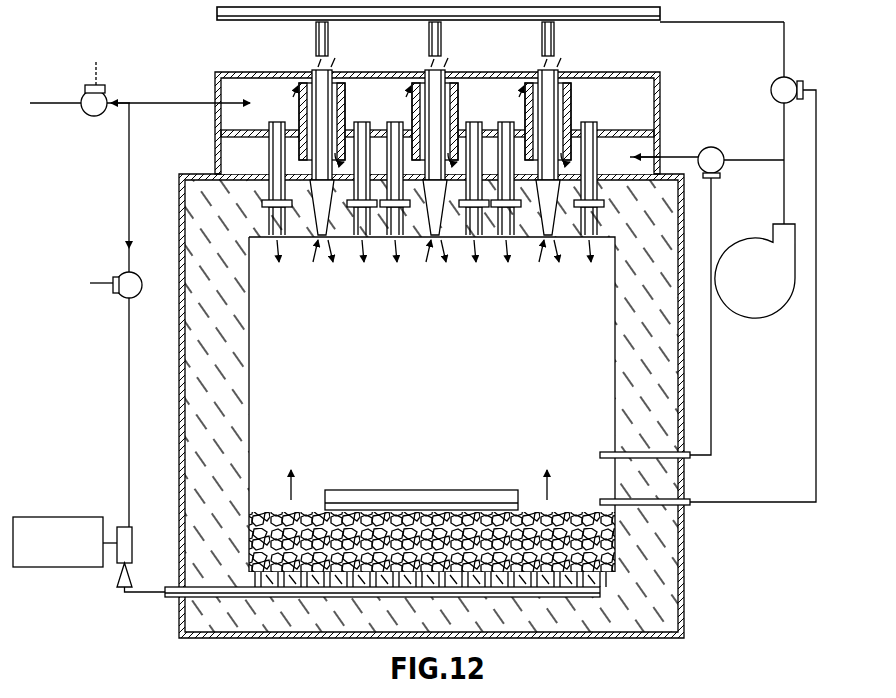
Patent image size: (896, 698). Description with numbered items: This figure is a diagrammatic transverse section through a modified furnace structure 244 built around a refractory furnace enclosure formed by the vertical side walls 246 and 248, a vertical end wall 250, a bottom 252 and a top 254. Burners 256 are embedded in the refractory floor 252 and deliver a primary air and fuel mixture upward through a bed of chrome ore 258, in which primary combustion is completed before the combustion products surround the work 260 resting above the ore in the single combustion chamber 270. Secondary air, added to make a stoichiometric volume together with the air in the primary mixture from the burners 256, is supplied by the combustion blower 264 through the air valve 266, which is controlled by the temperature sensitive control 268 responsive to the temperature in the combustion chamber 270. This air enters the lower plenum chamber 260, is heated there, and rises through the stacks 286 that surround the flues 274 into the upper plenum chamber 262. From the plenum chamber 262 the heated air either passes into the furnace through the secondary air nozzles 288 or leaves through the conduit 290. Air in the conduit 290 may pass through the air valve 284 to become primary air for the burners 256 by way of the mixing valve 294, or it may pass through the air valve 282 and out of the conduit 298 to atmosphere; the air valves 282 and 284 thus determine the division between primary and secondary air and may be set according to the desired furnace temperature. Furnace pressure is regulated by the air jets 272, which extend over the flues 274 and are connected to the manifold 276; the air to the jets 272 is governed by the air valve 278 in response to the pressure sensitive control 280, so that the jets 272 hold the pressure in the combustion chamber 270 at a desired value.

The furnace structure 244 is at (124, 361).
The vertical side wall 246 is at (668, 423).
The vertical side wall 248 is at (247, 387).
The vertical end wall 250 is at (512, 411).
The bottom 252 is at (252, 625).
The top 254 is at (198, 201).
The burners 256 is at (574, 606).
The chrome ore 258 is at (607, 558).
The plenum chamber 260 is at (392, 489).
The plenum chamber 262 is at (404, 109).
The combustion blower 264 is at (737, 320).
The air valve 266 is at (707, 170).
The temperature sensitive control 268 is at (690, 458).
The combustion chamber 270 is at (460, 349).
The air jets 272 is at (442, 46).
The flues 274 is at (444, 73).
The manifold 276 is at (618, 24).
The air valve 278 is at (771, 90).
The pressure sensitive control 280 is at (690, 505).
The air valve 282 is at (86, 91).
The air valve 284 is at (118, 271).
The stacks 286 is at (584, 117).
The secondary air nozzles 288 is at (507, 122).
The conduit 290 is at (158, 104).
The mixing valve 294 is at (121, 527).
The conduit 298 is at (42, 104).